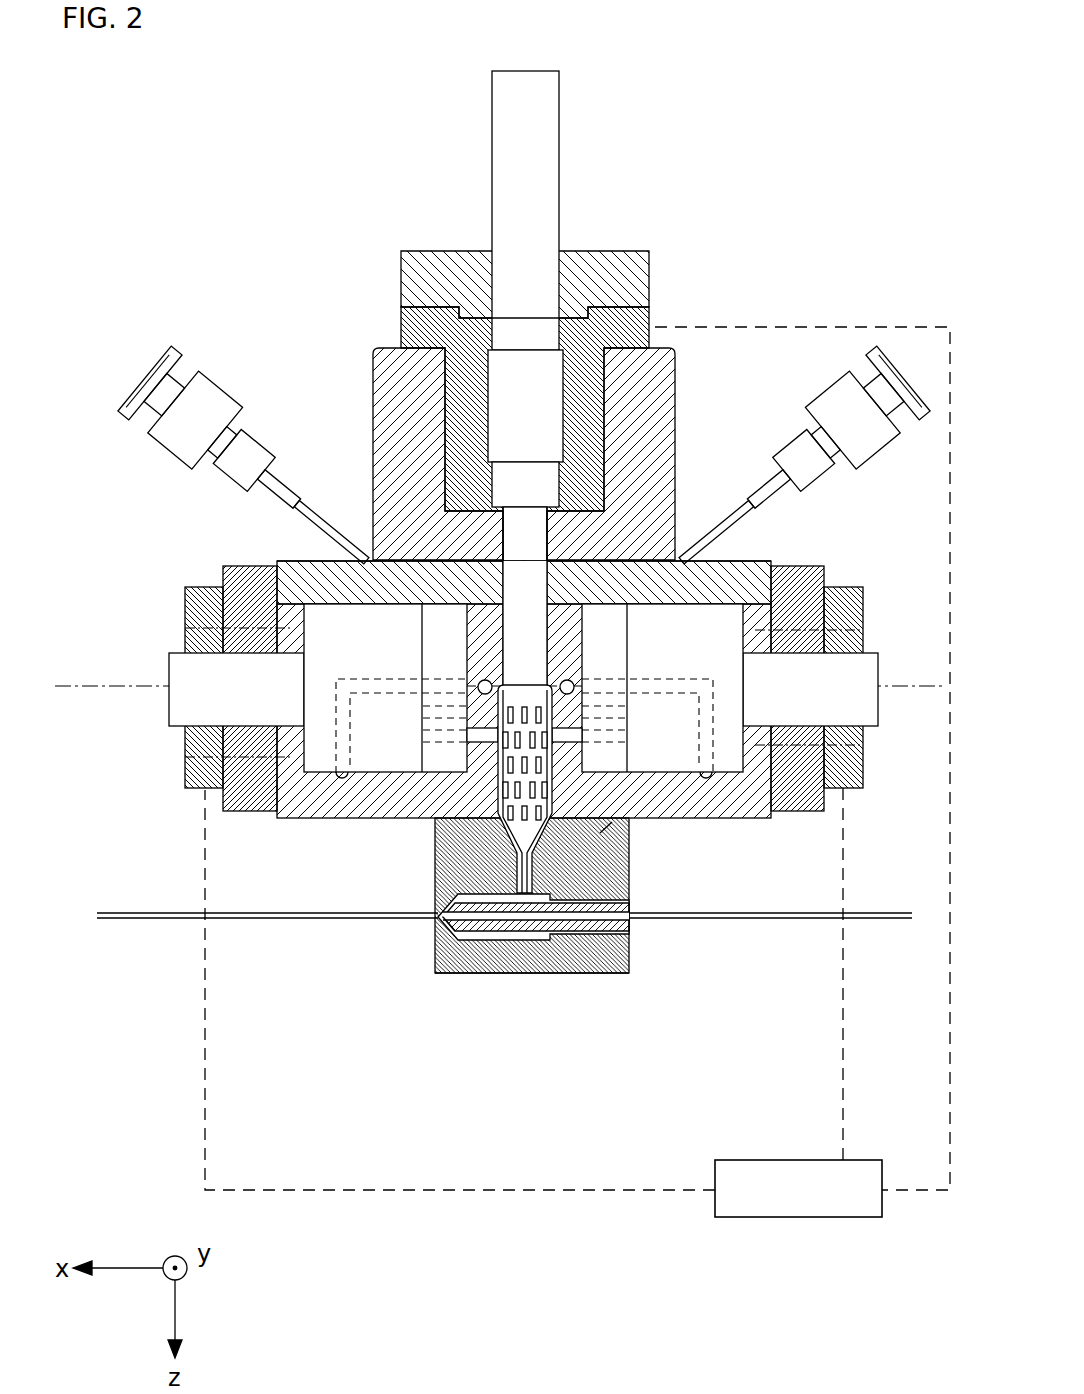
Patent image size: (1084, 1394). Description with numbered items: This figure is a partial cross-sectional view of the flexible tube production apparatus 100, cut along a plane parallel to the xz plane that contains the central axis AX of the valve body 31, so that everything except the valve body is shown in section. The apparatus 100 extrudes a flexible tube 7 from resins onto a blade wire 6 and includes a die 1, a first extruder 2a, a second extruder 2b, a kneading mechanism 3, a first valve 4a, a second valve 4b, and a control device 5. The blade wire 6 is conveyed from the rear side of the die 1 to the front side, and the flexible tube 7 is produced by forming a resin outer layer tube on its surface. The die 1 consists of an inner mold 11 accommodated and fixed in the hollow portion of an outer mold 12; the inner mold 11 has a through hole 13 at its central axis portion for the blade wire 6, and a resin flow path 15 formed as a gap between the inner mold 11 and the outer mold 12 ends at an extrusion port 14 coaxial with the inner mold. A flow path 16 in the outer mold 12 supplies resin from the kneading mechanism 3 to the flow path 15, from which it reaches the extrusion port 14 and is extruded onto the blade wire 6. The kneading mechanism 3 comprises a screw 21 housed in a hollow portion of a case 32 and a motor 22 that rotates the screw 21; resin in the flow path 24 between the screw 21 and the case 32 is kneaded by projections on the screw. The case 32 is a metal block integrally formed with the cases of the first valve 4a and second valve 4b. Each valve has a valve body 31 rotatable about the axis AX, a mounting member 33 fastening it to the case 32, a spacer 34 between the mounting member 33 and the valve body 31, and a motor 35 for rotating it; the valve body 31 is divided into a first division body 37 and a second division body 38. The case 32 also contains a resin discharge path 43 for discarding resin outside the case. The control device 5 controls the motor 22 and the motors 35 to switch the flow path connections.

The flexible tube production apparatus 100 is at (165, 193).
The die 1 is at (575, 973).
The first extruder 2a is at (215, 385).
The second extruder 2b is at (828, 390).
The kneading mechanism 3 is at (640, 565).
The first valve 4a is at (285, 560).
The second valve 4b is at (775, 560).
The control device 5 is at (860, 1160).
The blade wire 6 is at (885, 913).
The flexible tube 7 is at (148, 913).
The inner mold 11 is at (630, 925).
The outer mold 12 is at (630, 960).
The through hole 13 is at (630, 908).
The extrusion port 14 is at (440, 925).
The resin flow path 15 is at (488, 962).
The flow path 16 is at (456, 895).
The screw 21 is at (532, 760).
The motor 22 is at (649, 320).
The flow path 24 is at (600, 833).
The valve body 31 is at (168, 670).
The case 32 is at (375, 818).
The mounting member 33 is at (222, 567).
The spacer 34 is at (222, 628).
The motor 35 is at (186, 600).
The first division body 37 is at (437, 763).
The second division body 38 is at (318, 770).
The resin discharge path 43 is at (337, 820).
The central axis AX is at (88, 683).